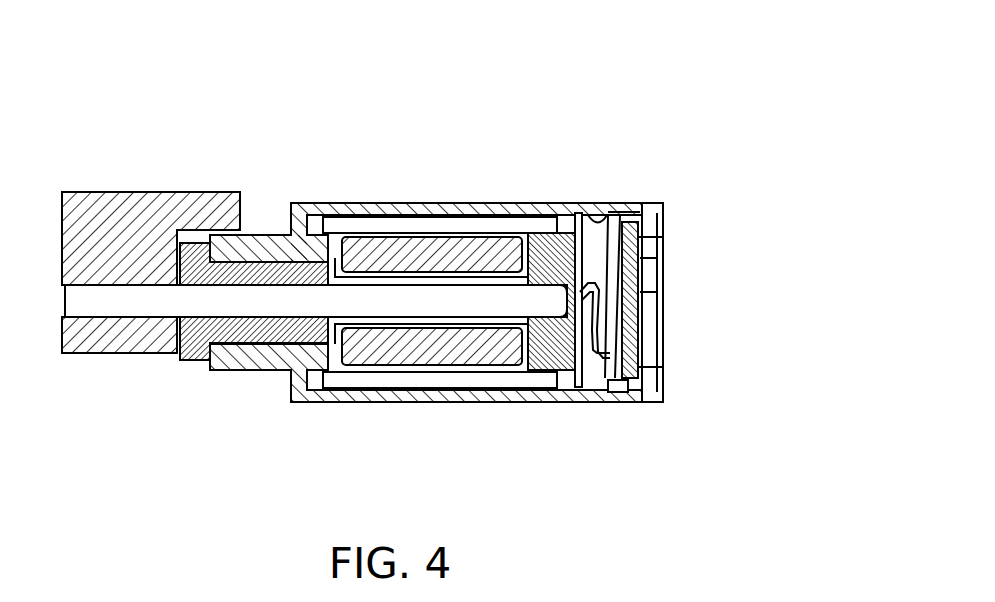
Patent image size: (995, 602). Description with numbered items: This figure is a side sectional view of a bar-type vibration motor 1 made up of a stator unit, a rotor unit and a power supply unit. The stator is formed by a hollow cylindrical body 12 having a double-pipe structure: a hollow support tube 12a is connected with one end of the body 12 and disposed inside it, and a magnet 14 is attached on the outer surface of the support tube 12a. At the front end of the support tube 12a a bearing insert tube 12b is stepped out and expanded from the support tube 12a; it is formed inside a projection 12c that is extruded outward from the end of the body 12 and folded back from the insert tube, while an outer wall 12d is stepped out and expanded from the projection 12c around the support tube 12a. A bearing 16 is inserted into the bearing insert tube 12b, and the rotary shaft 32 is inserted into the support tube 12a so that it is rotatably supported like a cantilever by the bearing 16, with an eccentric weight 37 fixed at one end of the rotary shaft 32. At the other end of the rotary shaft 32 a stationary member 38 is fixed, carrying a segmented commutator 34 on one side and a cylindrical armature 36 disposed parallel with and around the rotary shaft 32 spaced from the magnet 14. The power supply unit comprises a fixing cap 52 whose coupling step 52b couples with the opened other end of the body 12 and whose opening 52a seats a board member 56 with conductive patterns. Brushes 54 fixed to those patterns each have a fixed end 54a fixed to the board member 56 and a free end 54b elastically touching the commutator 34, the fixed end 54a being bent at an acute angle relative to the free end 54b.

The bar-type vibration motor 1 is at (206, 88).
The body 12 is at (441, 182).
The support tube 12a is at (391, 333).
The bearing insert tube 12b is at (268, 256).
The projection 12c is at (207, 364).
The outer wall 12d is at (387, 205).
The magnet 14 is at (470, 253).
The bearing 16 is at (193, 362).
The rotary shaft 32 is at (108, 303).
The commutator 34 is at (570, 203).
The armature 36 is at (358, 222).
The eccentric weight 37 is at (103, 232).
The stationary member 38 is at (543, 365).
The fixing cap 52 is at (653, 310).
The opening 52a is at (630, 210).
The coupling step 52b is at (598, 214).
The brush 54 is at (598, 380).
The fixed end 54a is at (645, 258).
The free end 54b is at (640, 292).
The board member 56 is at (627, 393).